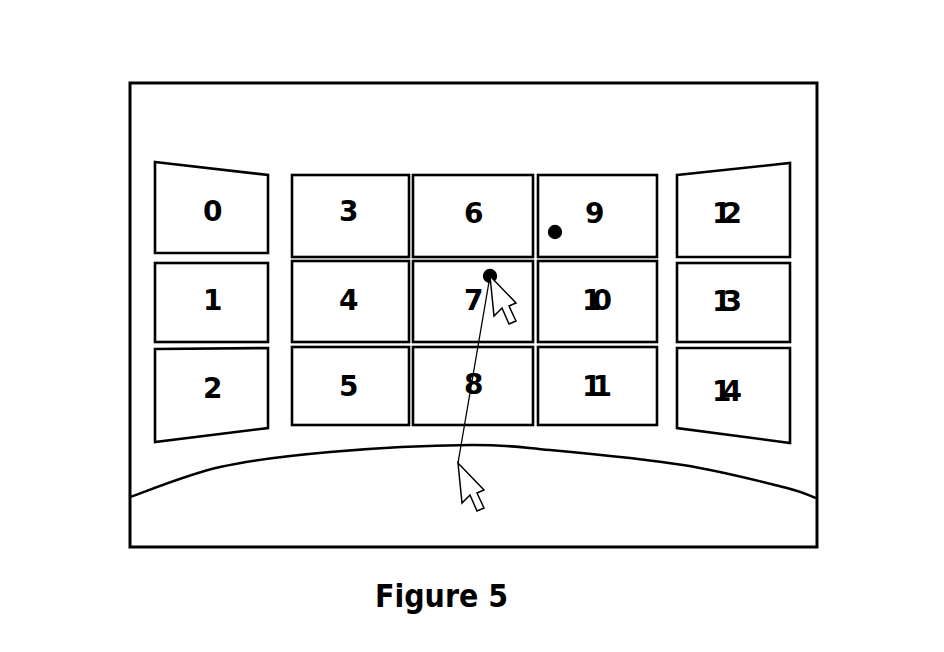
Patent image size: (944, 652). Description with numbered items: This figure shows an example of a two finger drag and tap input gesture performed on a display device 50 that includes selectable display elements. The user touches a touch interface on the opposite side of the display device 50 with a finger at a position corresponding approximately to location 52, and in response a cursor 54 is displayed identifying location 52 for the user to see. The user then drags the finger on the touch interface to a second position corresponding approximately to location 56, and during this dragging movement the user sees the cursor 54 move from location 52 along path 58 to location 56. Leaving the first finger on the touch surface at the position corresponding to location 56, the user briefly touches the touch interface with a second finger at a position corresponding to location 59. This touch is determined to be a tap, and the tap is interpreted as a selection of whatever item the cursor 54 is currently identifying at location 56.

The display device 50 is at (725, 83).
The location 52 is at (452, 461).
The cursor 54 is at (514, 298).
The location 56 is at (488, 270).
The path 58 is at (467, 410).
The location 59 is at (557, 227).